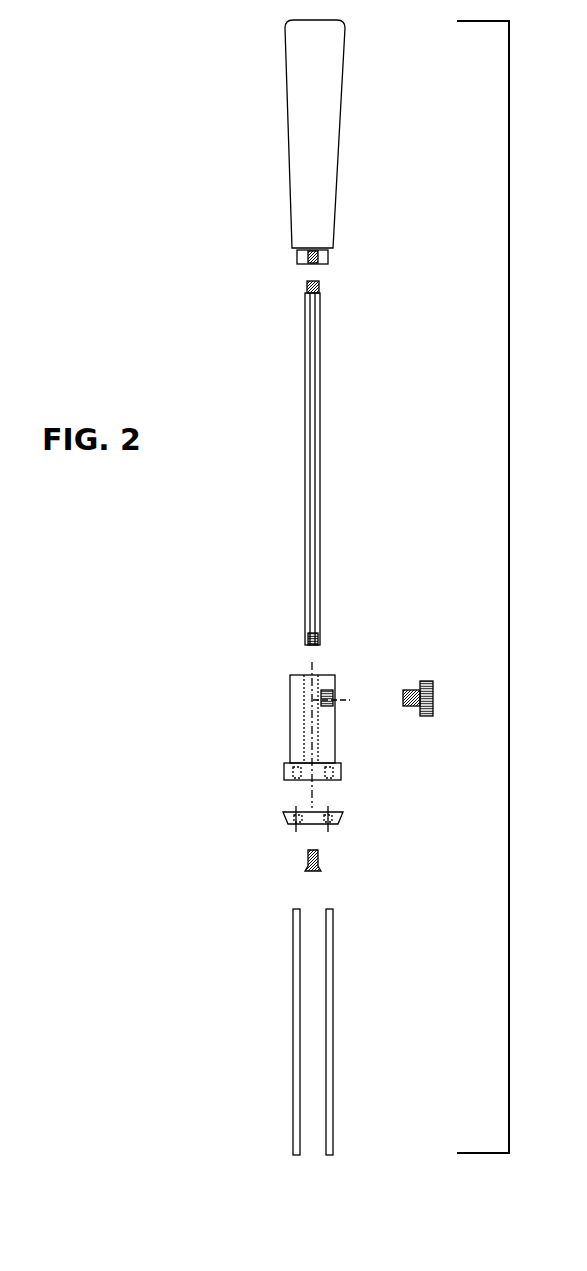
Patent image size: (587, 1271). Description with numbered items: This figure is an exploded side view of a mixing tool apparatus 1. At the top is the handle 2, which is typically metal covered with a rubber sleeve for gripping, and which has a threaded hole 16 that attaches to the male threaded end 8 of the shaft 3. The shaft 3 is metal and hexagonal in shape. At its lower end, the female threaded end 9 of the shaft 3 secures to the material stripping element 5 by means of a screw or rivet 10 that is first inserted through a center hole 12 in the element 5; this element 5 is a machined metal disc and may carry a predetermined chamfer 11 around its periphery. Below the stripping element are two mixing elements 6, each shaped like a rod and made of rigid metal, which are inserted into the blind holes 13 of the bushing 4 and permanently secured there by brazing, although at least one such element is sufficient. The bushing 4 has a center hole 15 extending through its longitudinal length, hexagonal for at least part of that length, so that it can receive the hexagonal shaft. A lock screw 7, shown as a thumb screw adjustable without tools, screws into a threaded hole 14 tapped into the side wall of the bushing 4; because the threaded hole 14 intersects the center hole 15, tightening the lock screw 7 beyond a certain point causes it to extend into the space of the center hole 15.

The apparatus 1 is at (513, 587).
The handle 2 is at (284, 163).
The shaft 3 is at (305, 528).
The bushing 4 is at (290, 715).
The material stripping element 5 is at (283, 815).
The mixing element 6 is at (293, 1036).
The lock screw 7 is at (428, 681).
The male threaded end 8 is at (305, 288).
The female threaded end 9 is at (320, 640).
The screw or rivet 10 is at (323, 869).
The chamfer 11 is at (342, 820).
The center hole 12 is at (310, 832).
The blind hole 13 is at (293, 773).
The threaded hole 14 is at (335, 705).
The center hole 15 is at (312, 662).
The threaded hole 16 is at (328, 258).